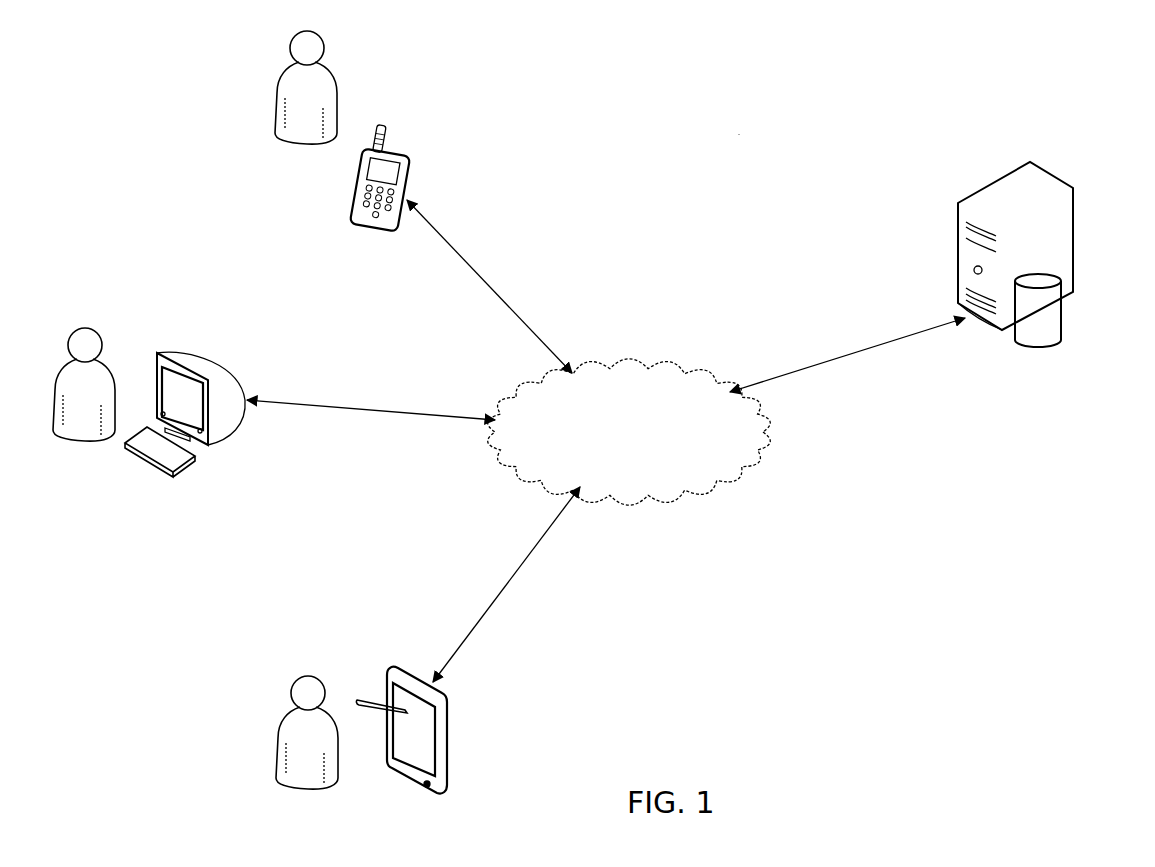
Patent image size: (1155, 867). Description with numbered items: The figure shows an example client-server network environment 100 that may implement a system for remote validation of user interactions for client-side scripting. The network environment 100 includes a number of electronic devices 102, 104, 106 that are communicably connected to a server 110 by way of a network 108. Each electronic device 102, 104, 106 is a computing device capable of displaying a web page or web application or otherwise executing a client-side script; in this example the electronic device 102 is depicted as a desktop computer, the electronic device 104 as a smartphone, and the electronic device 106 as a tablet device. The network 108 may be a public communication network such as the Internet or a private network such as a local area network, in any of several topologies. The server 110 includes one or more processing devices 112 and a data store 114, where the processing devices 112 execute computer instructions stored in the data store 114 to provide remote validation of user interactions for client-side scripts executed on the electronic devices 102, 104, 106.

The network environment 100 is at (739, 134).
The electronic device 102 is at (353, 190).
The electronic device 104 is at (207, 360).
The electronic device 106 is at (398, 667).
The network 108 is at (629, 368).
The server 110 is at (1022, 251).
The processing devices 112 is at (1051, 170).
The data store 114 is at (1062, 327).